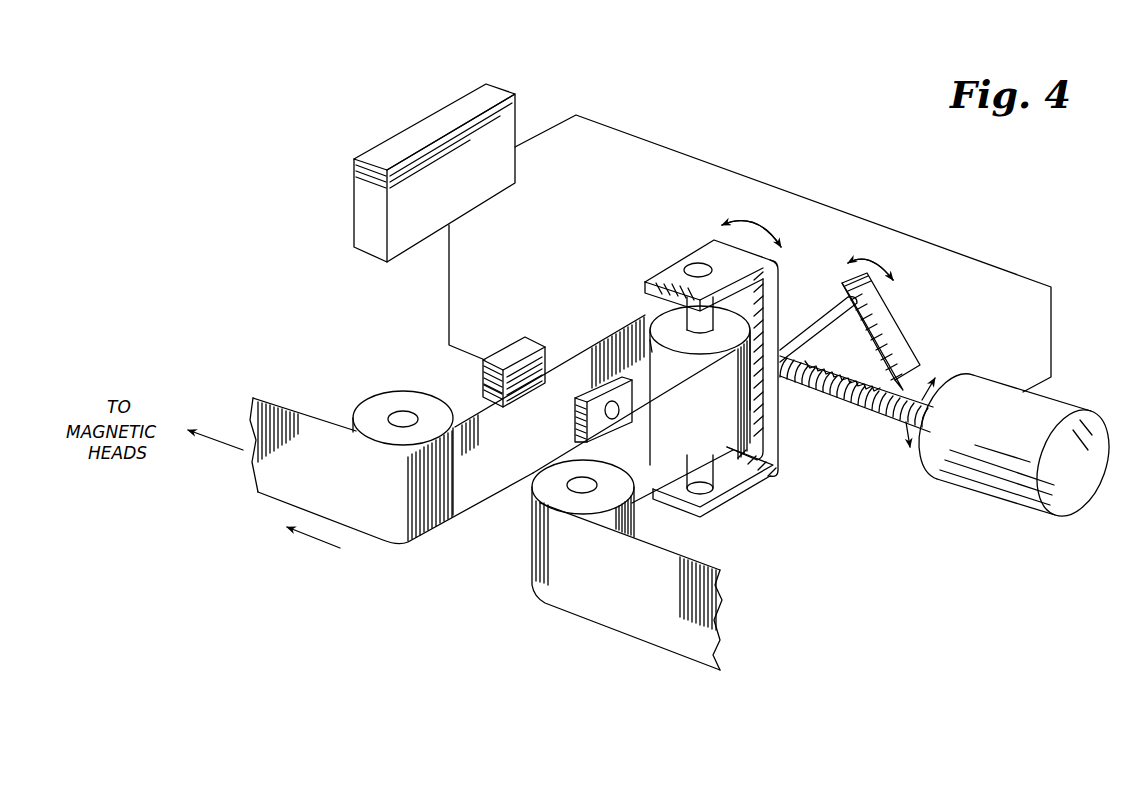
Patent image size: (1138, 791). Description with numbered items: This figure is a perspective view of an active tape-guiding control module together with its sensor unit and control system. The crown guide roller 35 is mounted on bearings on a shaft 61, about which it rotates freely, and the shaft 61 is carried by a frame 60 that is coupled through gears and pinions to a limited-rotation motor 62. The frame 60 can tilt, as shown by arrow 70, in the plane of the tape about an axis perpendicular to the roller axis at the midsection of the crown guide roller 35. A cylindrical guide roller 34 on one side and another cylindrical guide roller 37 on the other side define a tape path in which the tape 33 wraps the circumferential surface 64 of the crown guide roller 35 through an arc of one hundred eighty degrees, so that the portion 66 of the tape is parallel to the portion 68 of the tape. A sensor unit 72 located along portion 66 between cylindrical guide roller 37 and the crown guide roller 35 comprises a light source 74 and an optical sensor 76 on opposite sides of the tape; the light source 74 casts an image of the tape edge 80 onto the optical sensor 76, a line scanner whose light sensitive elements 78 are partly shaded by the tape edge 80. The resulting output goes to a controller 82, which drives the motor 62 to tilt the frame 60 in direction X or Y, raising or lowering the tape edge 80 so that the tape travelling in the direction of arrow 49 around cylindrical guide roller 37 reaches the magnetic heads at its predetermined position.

The tape 33 is at (642, 627).
The cylindrical guide roller 34 is at (613, 485).
The crown guide roller 35 is at (668, 320).
The cylindrical guide roller 37 is at (380, 400).
The arrow 49 is at (328, 544).
The frame 60 is at (705, 255).
The shaft 61 is at (710, 320).
The limited-rotation motor 62 is at (1053, 413).
The circumferential surface 64 is at (652, 352).
The portion of the tape 66 is at (493, 493).
The portion of the tape 68 is at (710, 437).
The arrow 70 is at (755, 220).
The sensor unit 72 is at (555, 330).
The light source 74 is at (575, 415).
The optical sensor 76 is at (517, 347).
The light sensitive elements 78 is at (478, 386).
The tape edge 80 is at (580, 353).
The controller 82 is at (414, 130).